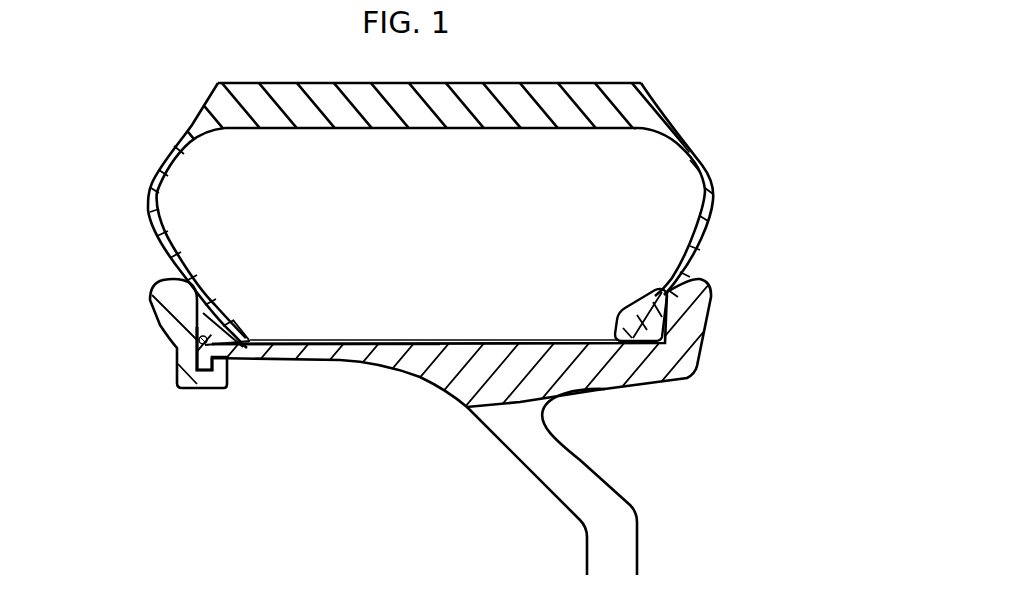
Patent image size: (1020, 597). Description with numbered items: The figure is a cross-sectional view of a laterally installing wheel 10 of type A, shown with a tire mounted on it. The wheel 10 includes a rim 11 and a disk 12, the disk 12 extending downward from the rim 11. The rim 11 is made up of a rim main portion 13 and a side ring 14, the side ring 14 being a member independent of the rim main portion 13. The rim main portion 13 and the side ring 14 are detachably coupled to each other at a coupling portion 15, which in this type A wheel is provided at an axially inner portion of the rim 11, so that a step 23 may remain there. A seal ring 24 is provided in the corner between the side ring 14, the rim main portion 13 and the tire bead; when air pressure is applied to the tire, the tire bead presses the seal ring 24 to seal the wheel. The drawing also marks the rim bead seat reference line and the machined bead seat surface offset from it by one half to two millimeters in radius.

The laterally installing wheel 10 is at (434, 244).
The rim 11 is at (465, 363).
The disk 12 is at (595, 490).
The rim main portion 13 is at (341, 363).
The side ring 14 is at (165, 312).
The coupling portion 15 is at (222, 363).
The step 23 is at (238, 360).
The seal ring 24 is at (198, 340).